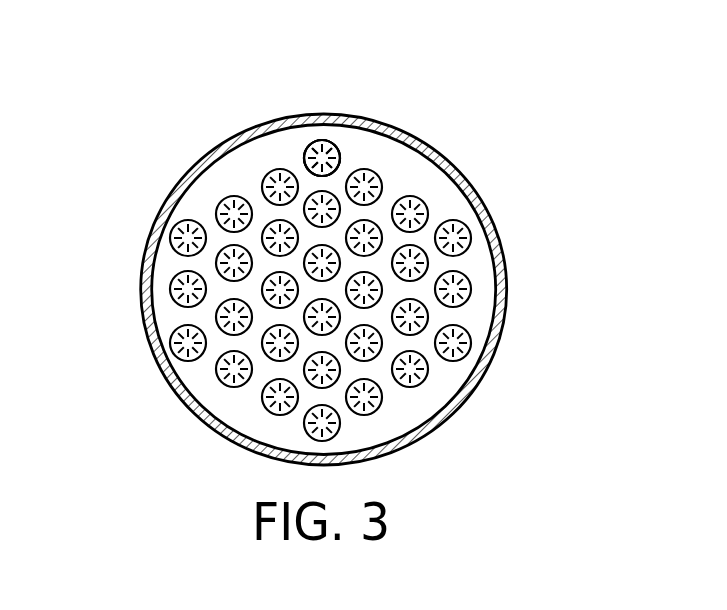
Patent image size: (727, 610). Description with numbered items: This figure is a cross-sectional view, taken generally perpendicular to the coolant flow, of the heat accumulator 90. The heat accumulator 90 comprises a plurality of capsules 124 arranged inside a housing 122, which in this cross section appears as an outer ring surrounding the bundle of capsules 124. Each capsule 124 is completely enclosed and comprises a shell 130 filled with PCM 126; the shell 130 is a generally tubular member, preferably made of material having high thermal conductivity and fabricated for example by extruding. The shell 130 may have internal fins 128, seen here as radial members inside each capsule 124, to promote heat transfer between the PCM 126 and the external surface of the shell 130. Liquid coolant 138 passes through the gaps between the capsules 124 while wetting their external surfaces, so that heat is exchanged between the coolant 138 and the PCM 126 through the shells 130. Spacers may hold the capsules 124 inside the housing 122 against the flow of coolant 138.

The heat accumulator 90 is at (525, 213).
The housing 122 is at (173, 188).
The capsule 124 is at (327, 132).
The PCM 126 is at (305, 147).
The internal fins 128 is at (341, 150).
The shell 130 is at (312, 141).
The coolant 138 is at (432, 185).